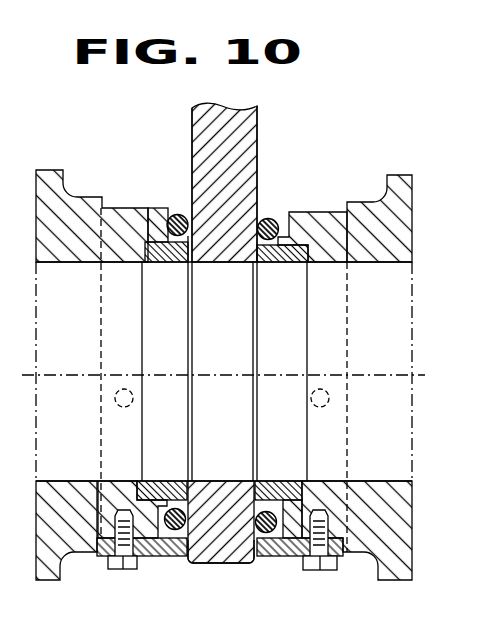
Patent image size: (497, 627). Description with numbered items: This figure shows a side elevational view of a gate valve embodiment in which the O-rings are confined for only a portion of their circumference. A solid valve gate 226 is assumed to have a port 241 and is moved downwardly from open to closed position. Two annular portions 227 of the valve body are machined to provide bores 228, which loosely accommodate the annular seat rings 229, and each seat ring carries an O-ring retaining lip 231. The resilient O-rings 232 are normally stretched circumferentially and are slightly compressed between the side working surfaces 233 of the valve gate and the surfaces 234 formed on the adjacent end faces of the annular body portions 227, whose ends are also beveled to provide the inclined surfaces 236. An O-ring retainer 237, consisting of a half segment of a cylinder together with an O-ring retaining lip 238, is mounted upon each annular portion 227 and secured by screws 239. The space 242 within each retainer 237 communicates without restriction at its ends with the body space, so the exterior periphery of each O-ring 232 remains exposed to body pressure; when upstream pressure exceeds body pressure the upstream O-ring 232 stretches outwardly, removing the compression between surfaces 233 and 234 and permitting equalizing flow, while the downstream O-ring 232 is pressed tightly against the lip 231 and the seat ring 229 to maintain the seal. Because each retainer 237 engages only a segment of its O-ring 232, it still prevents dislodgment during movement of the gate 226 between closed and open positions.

The valve gate 226 is at (250, 130).
The annular portions of the valve body 227 is at (110, 258).
The bores 228 is at (148, 232).
The annular seat rings 229 is at (171, 258).
The O-ring retaining lip 231 is at (190, 238).
The O-rings 232 is at (272, 218).
The side working surfaces of the valve gate 233 is at (192, 121).
The surfaces on the end faces of the annular body portion 234 is at (282, 236).
The inclined surfaces 236 is at (166, 215).
The O-ring retainer 237 is at (160, 535).
The O-ring retaining lip 238 is at (187, 532).
The screws 239 is at (113, 570).
The port 241 is at (243, 407).
The space within each retainer 242 is at (163, 557).